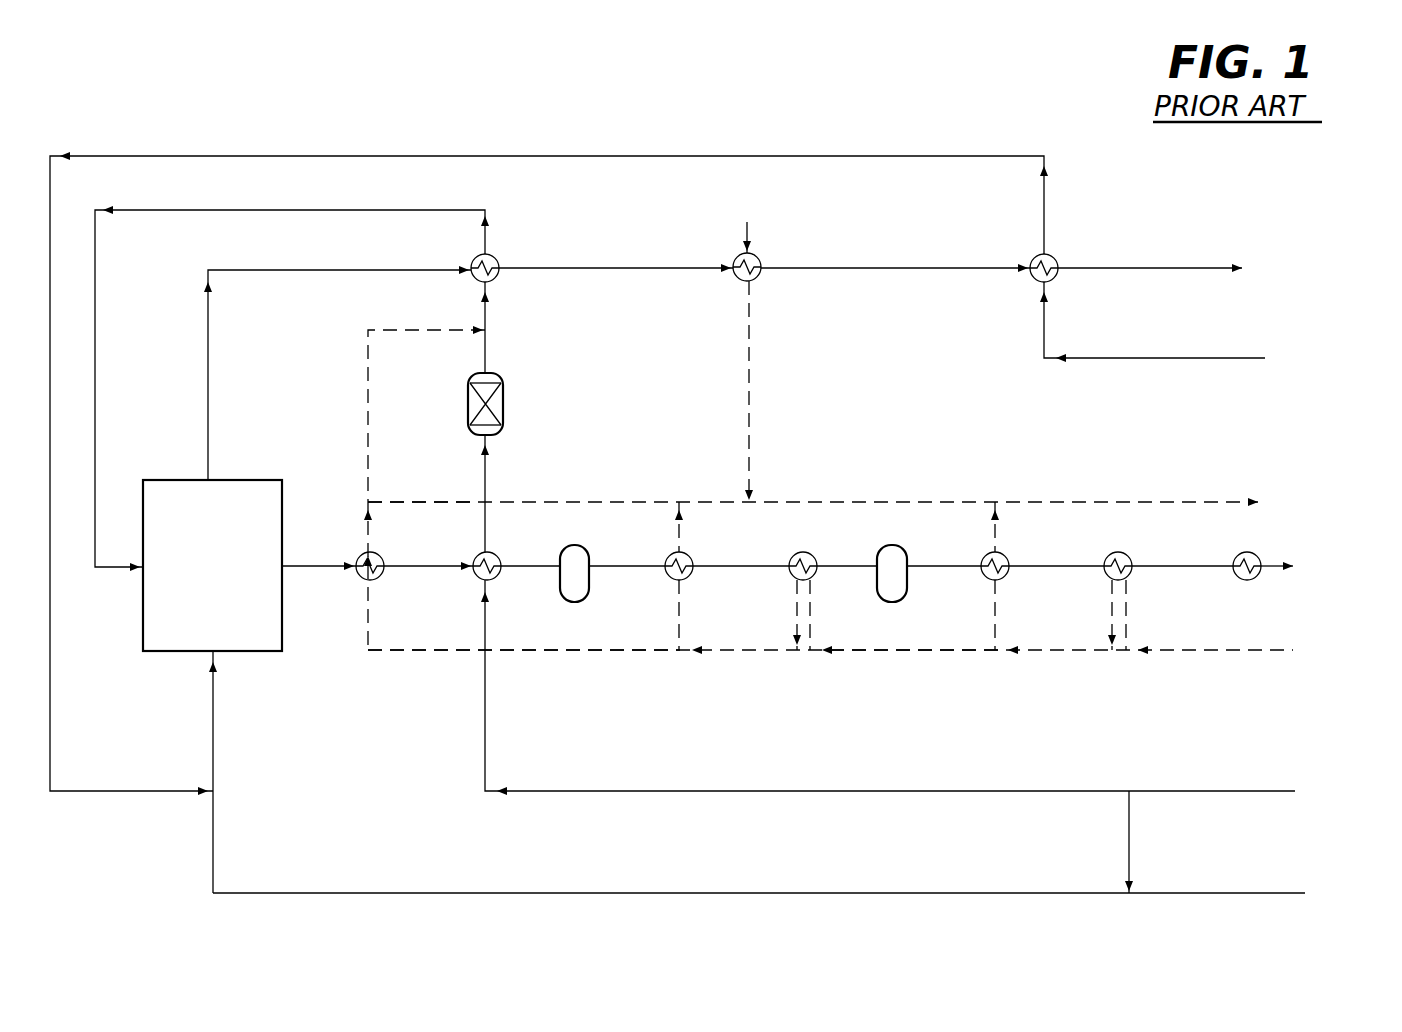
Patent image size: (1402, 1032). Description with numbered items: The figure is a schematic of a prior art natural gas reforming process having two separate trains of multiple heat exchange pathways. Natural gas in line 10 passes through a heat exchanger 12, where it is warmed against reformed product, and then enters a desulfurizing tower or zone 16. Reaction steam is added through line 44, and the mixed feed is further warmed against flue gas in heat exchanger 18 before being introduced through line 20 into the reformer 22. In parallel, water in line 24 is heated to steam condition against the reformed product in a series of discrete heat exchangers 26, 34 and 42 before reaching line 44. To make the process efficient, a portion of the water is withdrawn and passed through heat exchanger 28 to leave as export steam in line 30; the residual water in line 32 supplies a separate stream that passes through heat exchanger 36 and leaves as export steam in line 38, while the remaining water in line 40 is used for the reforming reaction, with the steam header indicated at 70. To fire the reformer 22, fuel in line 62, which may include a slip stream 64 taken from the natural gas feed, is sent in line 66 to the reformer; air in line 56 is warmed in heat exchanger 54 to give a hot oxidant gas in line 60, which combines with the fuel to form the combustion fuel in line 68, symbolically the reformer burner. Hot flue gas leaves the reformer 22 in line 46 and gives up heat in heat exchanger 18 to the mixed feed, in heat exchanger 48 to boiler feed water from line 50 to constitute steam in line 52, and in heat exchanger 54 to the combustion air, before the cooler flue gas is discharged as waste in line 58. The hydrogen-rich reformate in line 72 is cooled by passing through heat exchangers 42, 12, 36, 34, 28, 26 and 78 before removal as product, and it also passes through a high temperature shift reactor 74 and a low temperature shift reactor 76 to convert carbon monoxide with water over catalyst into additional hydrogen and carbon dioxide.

The natural gas line 10 is at (1175, 790).
The heat exchanger 12 is at (494, 556).
The desulfurizing tower 16 is at (503, 400).
The heat exchanger 18 is at (495, 258).
The reformer feed line 20 is at (97, 392).
The reformer 22 is at (223, 530).
The water line 24 is at (1165, 652).
The heat exchanger 26 is at (1127, 556).
The heat exchanger 28 is at (1002, 556).
The export steam line 30 is at (1060, 500).
The residual water line 32 is at (876, 652).
The heat exchanger 34 is at (810, 556).
The heat exchanger 36 is at (691, 556).
The export steam line 38 is at (684, 500).
The remaining water line 40 is at (552, 652).
The heat exchanger 42 is at (380, 556).
The steam line 44 is at (370, 408).
The flue gas line 46 is at (210, 392).
The heat exchanger 48 is at (755, 280).
The boiler feed water line 50 is at (748, 236).
The steam line 52 is at (751, 394).
The heat exchanger 54 is at (1056, 258).
The air line 56 is at (1152, 358).
The waste flue gas line 58 is at (1170, 266).
The hot oxidant gas line 60 is at (624, 156).
The fuel line 62 is at (1194, 892).
The slip stream line 64 is at (1132, 846).
The fuel line to reformer 66 is at (800, 892).
The combustion fuel line 68 is at (218, 688).
The steam line 70 is at (412, 502).
The reformate product line 72 is at (1272, 564).
The high temperature shift reactor 74 is at (586, 554).
The low temperature shift reactor 76 is at (902, 554).
The heat exchanger 78 is at (1235, 555).